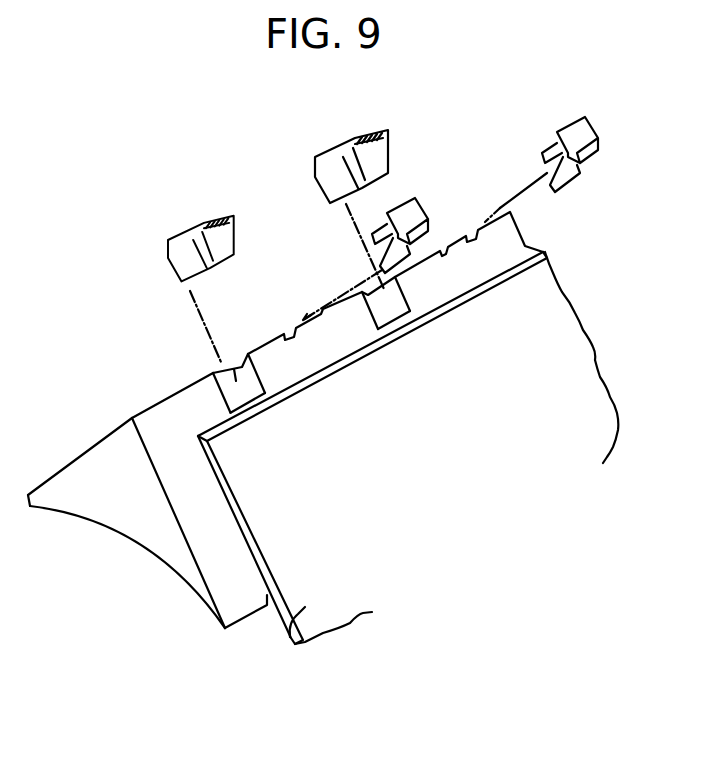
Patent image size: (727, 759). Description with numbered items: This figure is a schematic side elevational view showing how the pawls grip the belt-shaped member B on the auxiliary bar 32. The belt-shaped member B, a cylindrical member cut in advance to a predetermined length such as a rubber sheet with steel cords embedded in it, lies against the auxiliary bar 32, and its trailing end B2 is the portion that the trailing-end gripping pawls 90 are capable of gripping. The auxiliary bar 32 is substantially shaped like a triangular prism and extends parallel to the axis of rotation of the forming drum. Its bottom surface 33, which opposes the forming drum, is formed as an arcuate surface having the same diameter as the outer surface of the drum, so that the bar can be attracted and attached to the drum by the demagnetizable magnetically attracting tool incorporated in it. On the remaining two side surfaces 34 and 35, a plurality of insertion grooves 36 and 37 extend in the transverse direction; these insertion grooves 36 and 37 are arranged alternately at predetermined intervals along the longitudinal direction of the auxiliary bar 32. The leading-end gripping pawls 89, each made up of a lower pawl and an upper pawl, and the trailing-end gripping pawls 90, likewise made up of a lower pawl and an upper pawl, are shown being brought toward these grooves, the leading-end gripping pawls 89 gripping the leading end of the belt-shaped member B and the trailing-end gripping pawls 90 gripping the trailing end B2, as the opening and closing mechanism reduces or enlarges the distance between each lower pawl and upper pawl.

The auxiliary bar 32 is at (88, 450).
The bottom surface 33 is at (106, 526).
The side surface 34 is at (67, 464).
The side surface 35 is at (195, 522).
The insertion groove 36 is at (292, 334).
The insertion groove 37 is at (222, 371).
The leading-end gripping pawls 89 is at (404, 198).
The trailing-end gripping pawls 90 is at (198, 222).
The belt-shaped member B is at (292, 638).
The trailing end B2 is at (568, 355).